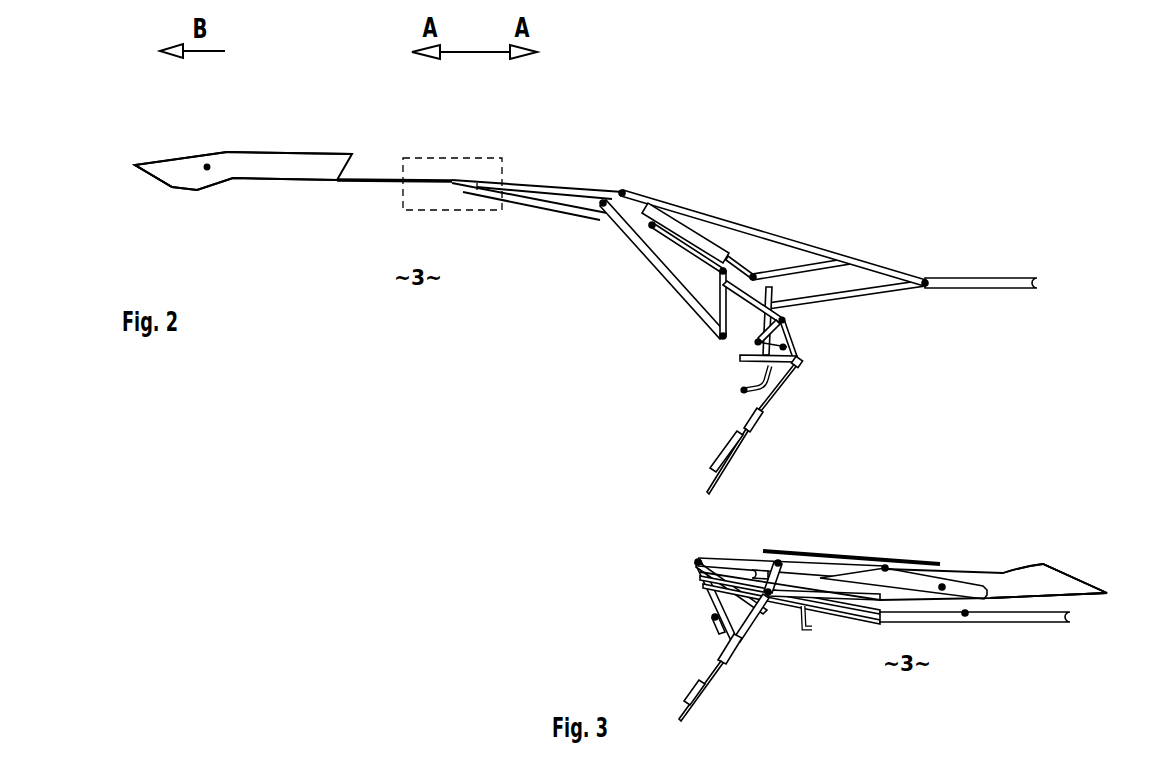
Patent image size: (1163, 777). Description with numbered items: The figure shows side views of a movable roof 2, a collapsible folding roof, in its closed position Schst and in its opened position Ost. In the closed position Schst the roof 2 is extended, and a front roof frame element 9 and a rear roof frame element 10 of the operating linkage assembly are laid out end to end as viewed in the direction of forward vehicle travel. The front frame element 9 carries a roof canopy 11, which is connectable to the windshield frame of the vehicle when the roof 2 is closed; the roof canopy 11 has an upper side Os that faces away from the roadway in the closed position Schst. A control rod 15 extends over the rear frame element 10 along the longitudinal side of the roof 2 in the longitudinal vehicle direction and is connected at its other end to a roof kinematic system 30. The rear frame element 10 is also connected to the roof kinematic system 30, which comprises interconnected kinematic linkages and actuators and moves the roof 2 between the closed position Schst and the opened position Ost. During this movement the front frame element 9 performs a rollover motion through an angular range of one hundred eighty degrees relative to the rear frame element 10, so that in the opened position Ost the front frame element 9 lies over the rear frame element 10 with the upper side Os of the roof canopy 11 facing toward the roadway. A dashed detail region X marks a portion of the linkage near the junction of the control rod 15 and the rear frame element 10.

In FIG. 2, the movable roof 2 is at (250, 147).
In FIG. 3, the movable roof 2 is at (888, 550).
In FIG. 2, the front roof frame element 9 is at (352, 183).
In FIG. 3, the front roof frame element 9 is at (800, 550).
In FIG. 2, the rear roof frame element 10 is at (547, 210).
In FIG. 2, the roof canopy 11 is at (207, 165).
In FIG. 3, the roof canopy 11 is at (1097, 583).
In FIG. 2, the control rod 15 is at (582, 188).
In FIG. 2, the roof kinematic system 30 is at (776, 212).
In FIG. 2, the upper side Os is at (147, 162).
In FIG. 3, the upper side Os is at (1087, 600).
In FIG. 3, the opened position Ost is at (1068, 557).
In FIG. 2, the closed position Schst is at (308, 145).
In FIG. 2, the detail region X is at (498, 157).